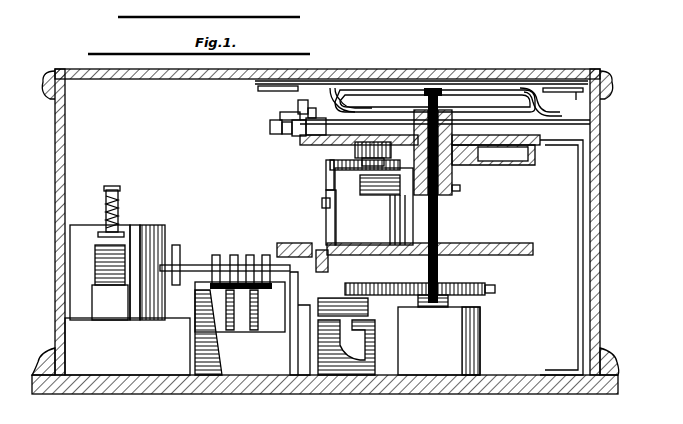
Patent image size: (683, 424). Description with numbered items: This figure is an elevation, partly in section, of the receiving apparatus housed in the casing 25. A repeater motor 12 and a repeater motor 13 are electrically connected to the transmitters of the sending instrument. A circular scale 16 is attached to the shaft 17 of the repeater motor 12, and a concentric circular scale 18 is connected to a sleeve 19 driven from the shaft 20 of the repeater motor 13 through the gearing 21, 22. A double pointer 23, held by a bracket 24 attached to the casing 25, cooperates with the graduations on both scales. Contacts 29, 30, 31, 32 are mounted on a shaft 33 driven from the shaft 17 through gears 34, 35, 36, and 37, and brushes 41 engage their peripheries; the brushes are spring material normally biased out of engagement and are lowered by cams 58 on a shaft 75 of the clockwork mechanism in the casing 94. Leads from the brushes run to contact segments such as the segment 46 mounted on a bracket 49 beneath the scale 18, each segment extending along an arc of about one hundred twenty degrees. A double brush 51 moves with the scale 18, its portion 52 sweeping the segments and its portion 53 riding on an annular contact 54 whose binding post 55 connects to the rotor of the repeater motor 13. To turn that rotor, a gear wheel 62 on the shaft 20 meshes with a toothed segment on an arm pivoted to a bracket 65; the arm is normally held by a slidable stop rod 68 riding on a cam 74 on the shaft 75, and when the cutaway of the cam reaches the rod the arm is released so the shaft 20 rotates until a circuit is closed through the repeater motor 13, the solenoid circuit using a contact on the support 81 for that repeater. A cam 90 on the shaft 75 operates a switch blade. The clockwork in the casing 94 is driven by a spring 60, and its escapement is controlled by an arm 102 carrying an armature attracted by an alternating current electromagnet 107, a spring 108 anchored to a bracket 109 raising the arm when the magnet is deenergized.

The repeater motor 12 is at (439, 341).
The repeater motor 13 is at (374, 206).
The circular scale 16 is at (480, 90).
The shaft 17 is at (440, 215).
The circular scale 18 is at (270, 91).
The sleeve 19 is at (472, 190).
The shaft 20 is at (412, 178).
The gearing 21 is at (355, 150).
The gearing 22 is at (493, 155).
The double pointer 23 is at (357, 92).
The bracket 24 is at (528, 88).
The casing 25 is at (563, 72).
The contact 29 is at (240, 320).
The contact 30 is at (258, 338).
The contact 31 is at (230, 330).
The contact 32 is at (195, 330).
The shaft 33 is at (300, 323).
The gear 34 is at (343, 304).
The gear 35 is at (354, 347).
The gear 36 is at (378, 283).
The gear 37 is at (495, 289).
The brush 41 is at (210, 285).
The contact segment 46 is at (298, 136).
The bracket 49 is at (285, 134).
The double brush 51 is at (280, 114).
The brush portion 52 is at (270, 126).
The brush portion 53 is at (297, 103).
The annular contact 54 is at (318, 113).
The binding post 55 is at (314, 135).
The cam 58 is at (244, 243).
The spring 60 is at (546, 200).
The gear wheel 62 is at (330, 165).
The bracket 65 is at (345, 207).
The stop rod 68 is at (322, 205).
The cam 74 is at (328, 262).
The shaft 75 is at (195, 265).
The support 81 is at (300, 243).
The cam 90 is at (177, 245).
The casing 94 is at (145, 225).
The arm 102 is at (98, 235).
The electromagnet 107 is at (95, 262).
The spring 108 is at (106, 200).
The bracket 109 is at (120, 192).